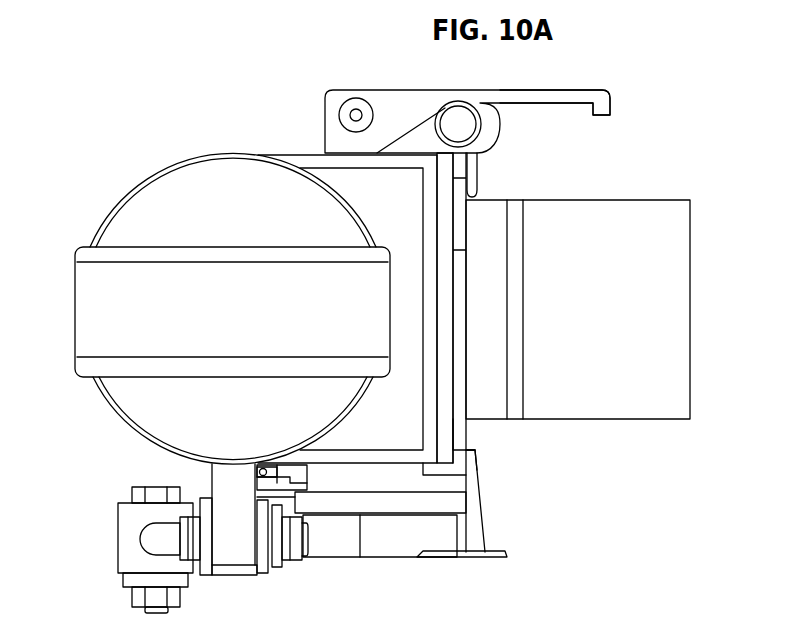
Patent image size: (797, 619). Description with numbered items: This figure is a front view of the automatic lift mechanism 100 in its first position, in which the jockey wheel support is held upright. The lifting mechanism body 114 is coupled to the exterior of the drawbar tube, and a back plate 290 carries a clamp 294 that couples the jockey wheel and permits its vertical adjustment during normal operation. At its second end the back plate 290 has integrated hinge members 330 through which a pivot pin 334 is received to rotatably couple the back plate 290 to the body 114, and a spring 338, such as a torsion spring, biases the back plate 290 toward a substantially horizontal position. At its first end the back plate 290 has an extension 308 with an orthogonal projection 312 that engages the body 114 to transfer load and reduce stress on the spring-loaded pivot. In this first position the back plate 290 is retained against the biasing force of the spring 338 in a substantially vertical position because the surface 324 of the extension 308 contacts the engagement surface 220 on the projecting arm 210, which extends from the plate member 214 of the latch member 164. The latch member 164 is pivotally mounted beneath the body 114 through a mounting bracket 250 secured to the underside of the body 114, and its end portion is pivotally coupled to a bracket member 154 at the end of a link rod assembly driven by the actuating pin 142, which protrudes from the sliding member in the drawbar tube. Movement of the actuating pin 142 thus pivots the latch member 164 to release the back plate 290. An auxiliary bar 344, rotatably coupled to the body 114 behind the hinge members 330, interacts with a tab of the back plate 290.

The automatic lift mechanism 100 is at (105, 73).
The lifting mechanism body 114 is at (305, 162).
The actuating pin 142 is at (222, 480).
The bracket member 154 is at (130, 538).
The latch member 164 is at (473, 534).
The projecting arm 210 is at (476, 491).
The plate member 214 is at (486, 556).
The engagement surface 220 is at (466, 500).
The mounting bracket 250 is at (306, 481).
The back plate 290 is at (458, 433).
The clamp 294 is at (675, 258).
The extension 308 is at (467, 452).
The projection 312 is at (424, 470).
The surface 324 is at (472, 458).
The hinge members 330 is at (490, 128).
The pivot pin 334 is at (458, 130).
The spring 338 is at (478, 182).
The auxiliary bar 344 is at (582, 98).